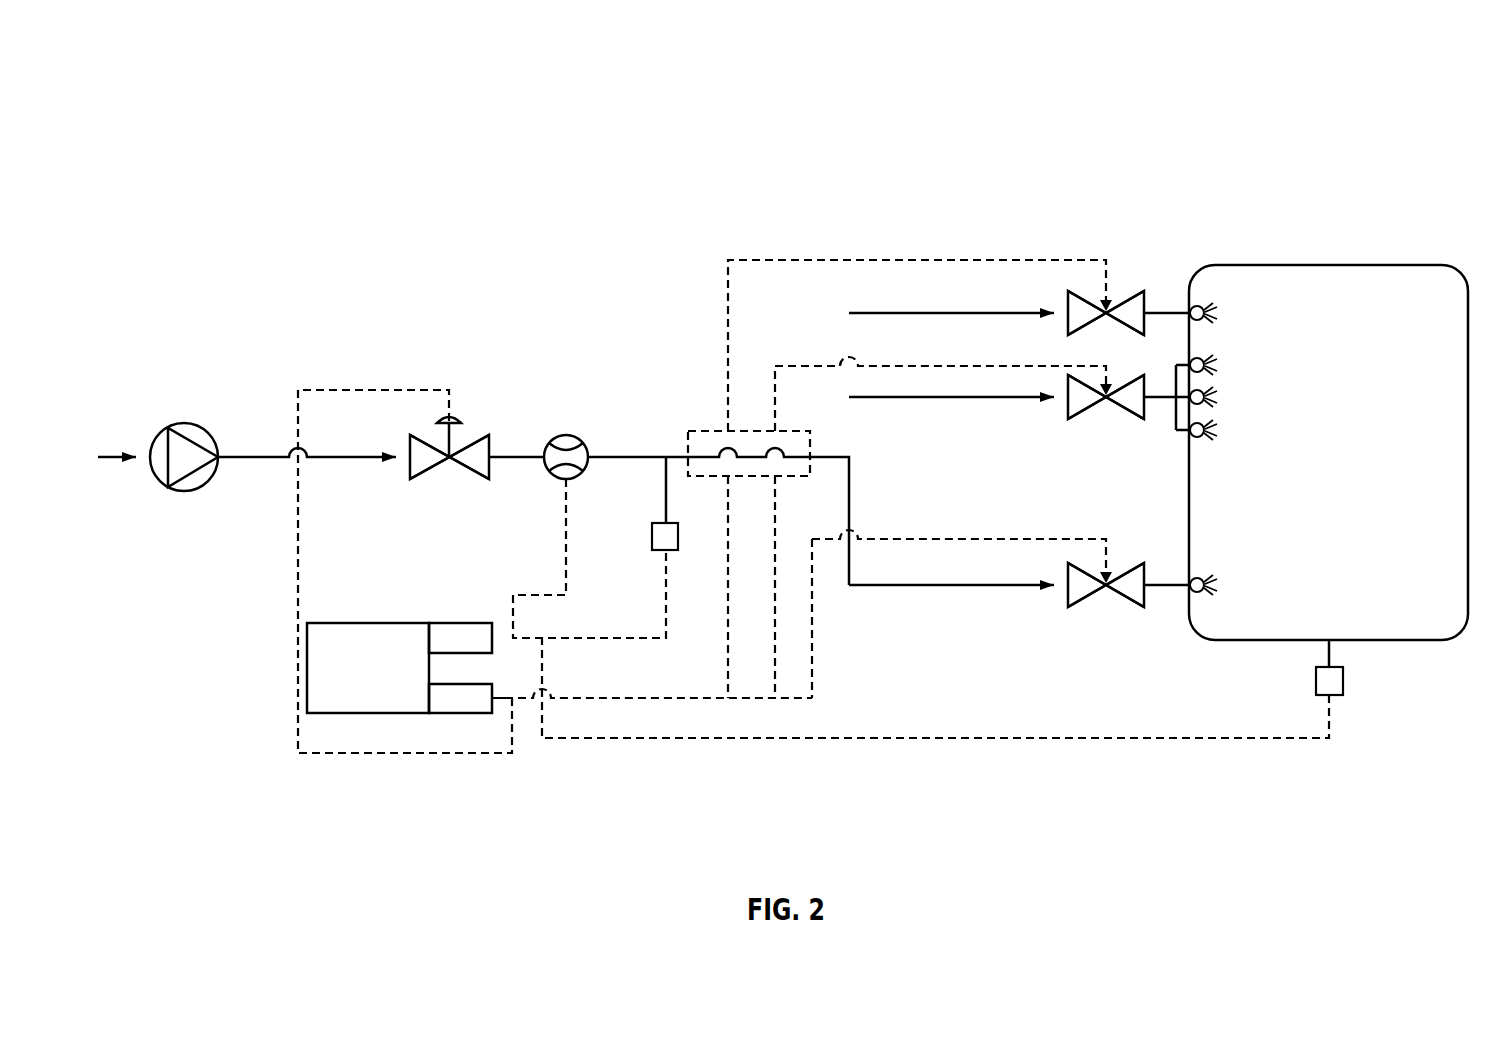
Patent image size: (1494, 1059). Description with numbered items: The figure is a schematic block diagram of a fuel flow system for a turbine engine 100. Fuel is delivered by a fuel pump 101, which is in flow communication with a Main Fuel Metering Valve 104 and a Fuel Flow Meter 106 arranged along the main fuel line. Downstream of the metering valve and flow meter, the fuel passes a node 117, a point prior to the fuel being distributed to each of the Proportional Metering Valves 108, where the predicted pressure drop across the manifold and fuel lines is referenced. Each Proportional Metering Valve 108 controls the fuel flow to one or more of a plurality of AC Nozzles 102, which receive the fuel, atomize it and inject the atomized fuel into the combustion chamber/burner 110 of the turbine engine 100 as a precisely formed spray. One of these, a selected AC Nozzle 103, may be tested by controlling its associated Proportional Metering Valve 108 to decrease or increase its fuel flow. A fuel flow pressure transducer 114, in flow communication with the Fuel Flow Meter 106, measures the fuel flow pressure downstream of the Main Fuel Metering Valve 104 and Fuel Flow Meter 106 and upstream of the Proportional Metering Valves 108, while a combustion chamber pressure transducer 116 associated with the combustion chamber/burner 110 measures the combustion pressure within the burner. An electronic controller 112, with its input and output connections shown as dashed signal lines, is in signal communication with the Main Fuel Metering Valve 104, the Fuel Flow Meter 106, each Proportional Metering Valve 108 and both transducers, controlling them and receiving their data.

The turbine engine 100 is at (1398, 136).
The fuel pump 101 is at (200, 427).
The AC Nozzles 102 is at (1306, 409).
The selected AC Nozzle 103 is at (1200, 305).
The Main Fuel Metering Valve 104 is at (488, 436).
The Fuel Flow Meter 106 is at (577, 437).
The Proportional Metering Valves 108 is at (1143, 291).
The combustion chamber/burner 110 is at (1237, 641).
The electronic controller 112 is at (372, 622).
The fuel flow pressure transducer 114 is at (678, 537).
The combustion chamber pressure transducer 116 is at (1345, 679).
The node 117 is at (710, 431).